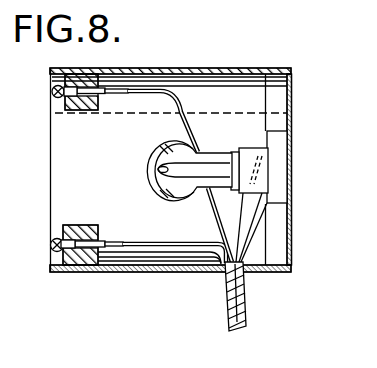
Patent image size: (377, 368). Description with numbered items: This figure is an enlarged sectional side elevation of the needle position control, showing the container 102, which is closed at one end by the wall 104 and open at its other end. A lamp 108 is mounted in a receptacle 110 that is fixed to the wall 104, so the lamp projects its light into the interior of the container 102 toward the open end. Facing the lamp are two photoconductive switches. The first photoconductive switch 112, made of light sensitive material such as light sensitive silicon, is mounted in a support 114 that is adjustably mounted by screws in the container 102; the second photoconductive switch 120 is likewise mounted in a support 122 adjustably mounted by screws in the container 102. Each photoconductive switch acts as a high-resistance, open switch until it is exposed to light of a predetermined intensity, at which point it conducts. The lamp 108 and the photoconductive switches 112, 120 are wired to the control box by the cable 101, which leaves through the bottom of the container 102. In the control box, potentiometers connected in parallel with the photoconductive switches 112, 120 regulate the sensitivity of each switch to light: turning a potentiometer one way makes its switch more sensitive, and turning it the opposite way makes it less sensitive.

The cable 101 is at (226, 300).
The container 102 is at (205, 70).
The wall 104 is at (291, 115).
The lamp 108 is at (151, 154).
The receptacle 110 is at (280, 172).
The photoconductive switch 112 is at (51, 91).
The support 114 is at (83, 110).
The photoconductive switch 120 is at (50, 244).
The support 122 is at (90, 265).